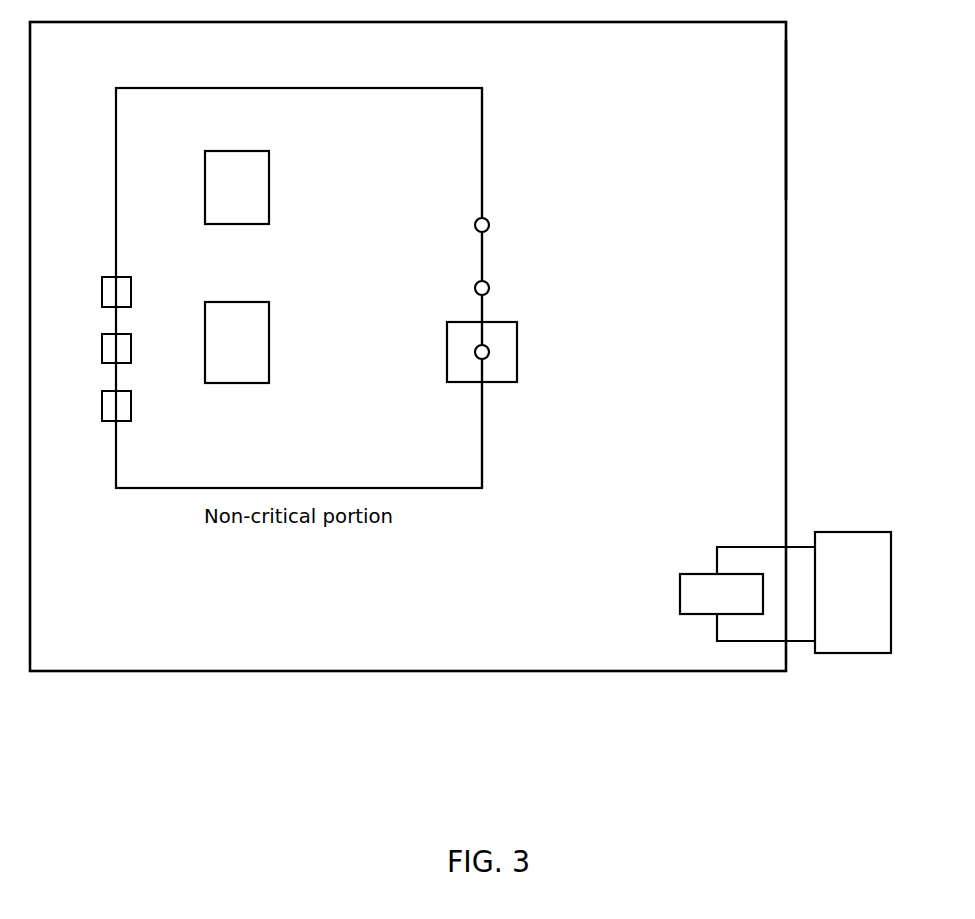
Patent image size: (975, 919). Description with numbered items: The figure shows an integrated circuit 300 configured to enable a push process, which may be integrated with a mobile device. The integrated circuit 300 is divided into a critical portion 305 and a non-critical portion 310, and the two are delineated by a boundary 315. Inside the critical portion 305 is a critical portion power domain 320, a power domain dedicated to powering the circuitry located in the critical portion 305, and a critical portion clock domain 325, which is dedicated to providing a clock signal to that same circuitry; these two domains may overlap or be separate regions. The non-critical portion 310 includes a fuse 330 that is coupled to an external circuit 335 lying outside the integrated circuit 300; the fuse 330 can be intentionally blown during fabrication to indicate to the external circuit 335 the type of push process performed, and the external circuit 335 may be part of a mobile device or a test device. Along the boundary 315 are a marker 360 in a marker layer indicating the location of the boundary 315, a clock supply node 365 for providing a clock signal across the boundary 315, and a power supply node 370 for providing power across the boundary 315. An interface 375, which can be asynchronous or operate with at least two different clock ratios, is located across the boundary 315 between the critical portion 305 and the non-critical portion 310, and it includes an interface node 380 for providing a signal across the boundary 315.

The integrated circuit 300 is at (415, 671).
The critical portion 305 is at (389, 97).
The non-critical portion 310 is at (778, 83).
The boundary 315 is at (483, 125).
The critical portion power domain 320 is at (233, 151).
The critical portion clock domain 325 is at (233, 302).
The fuse 330 is at (698, 574).
The external circuit 335 is at (838, 532).
The marker 360 is at (101, 290).
The clock supply node 365 is at (489, 226).
The power supply node 370 is at (489, 289).
The interface 375 is at (500, 382).
The interface node 380 is at (489, 352).